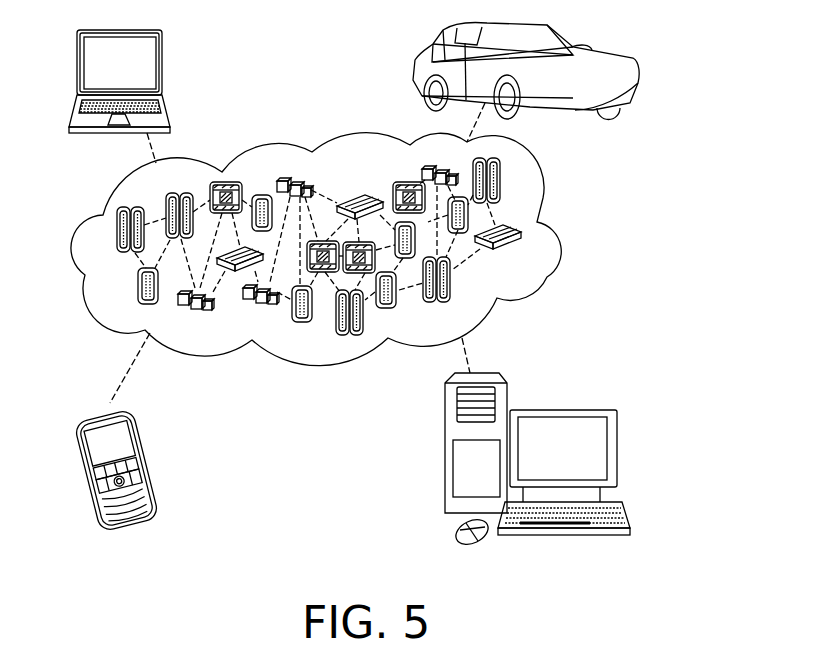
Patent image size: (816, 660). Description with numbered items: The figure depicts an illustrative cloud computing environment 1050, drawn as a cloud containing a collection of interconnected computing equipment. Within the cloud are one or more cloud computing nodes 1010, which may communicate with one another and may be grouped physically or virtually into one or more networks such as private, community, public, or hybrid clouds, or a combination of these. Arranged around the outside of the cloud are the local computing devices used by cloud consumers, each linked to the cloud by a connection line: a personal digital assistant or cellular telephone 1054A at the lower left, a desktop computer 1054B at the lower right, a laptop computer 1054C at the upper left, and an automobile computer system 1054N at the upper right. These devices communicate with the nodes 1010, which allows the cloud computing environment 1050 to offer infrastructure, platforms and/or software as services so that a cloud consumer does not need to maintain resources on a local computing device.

The laptop computer 1054C is at (162, 43).
The automobile computer system 1054N is at (413, 70).
The cloud computing environment 1050 is at (545, 197).
The cloud computing nodes 1010 is at (534, 242).
The personal digital assistant (PDA) or cellular telephone 1054A is at (155, 465).
The desktop computer 1054B is at (595, 410).